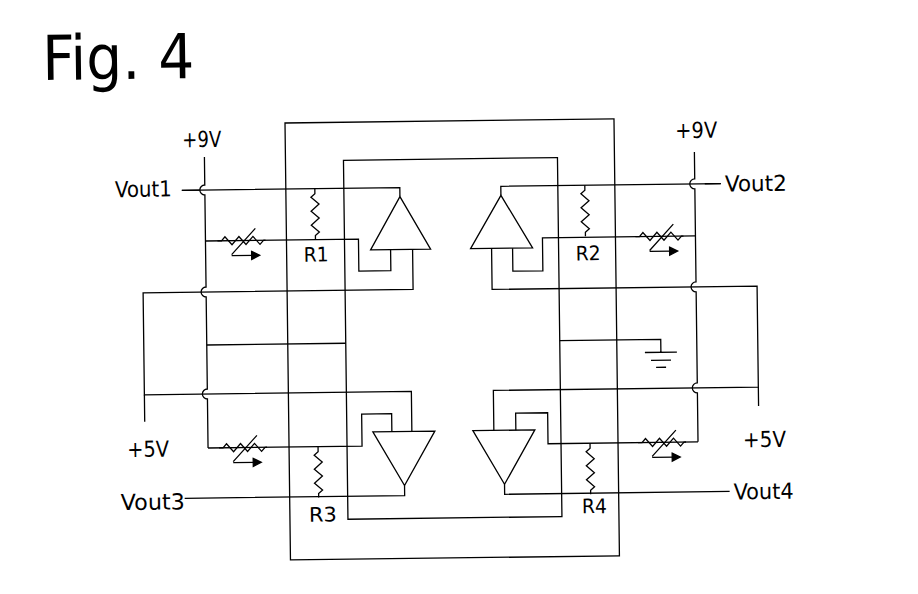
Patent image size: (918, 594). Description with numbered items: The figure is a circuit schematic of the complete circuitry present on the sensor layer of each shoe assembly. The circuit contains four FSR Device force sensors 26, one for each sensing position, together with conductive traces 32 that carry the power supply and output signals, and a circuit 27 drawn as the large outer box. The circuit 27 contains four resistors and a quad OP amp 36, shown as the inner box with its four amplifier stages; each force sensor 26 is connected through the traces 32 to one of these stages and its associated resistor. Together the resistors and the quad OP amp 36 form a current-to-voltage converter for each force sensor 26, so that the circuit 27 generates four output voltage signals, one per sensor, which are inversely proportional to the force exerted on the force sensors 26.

The force sensor 26 is at (453, 348).
The circuit 27 is at (569, 104).
The conductive traces 32 is at (189, 197).
The LM324 quad OP amp 36 is at (446, 199).